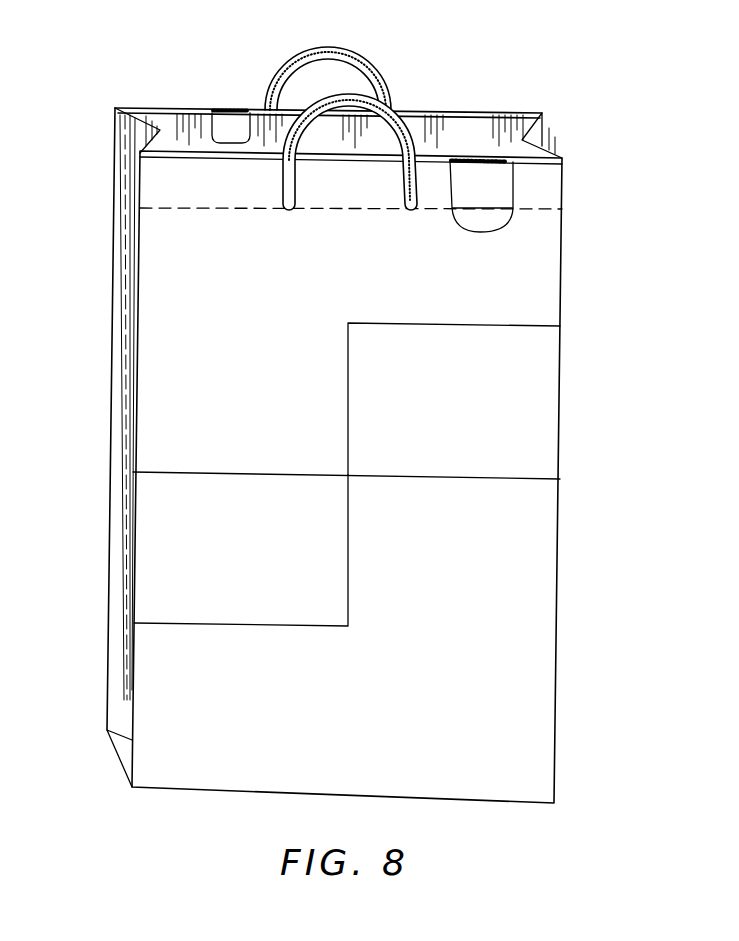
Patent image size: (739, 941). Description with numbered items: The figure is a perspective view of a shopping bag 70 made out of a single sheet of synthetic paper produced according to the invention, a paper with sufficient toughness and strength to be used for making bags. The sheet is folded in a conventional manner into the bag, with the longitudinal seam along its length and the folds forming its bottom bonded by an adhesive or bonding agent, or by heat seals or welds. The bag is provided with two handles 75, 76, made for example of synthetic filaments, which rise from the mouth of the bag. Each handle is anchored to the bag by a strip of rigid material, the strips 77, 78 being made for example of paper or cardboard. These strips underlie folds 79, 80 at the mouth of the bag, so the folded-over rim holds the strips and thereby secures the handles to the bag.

The shopping bag 70 is at (566, 482).
The handle 75 is at (372, 66).
The handle 76 is at (384, 106).
The strip of rigid material 77 is at (224, 126).
The strip of rigid material 78 is at (505, 197).
The fold at the mouth of the bag 79 is at (481, 125).
The fold at the mouth of the bag 80 is at (163, 186).